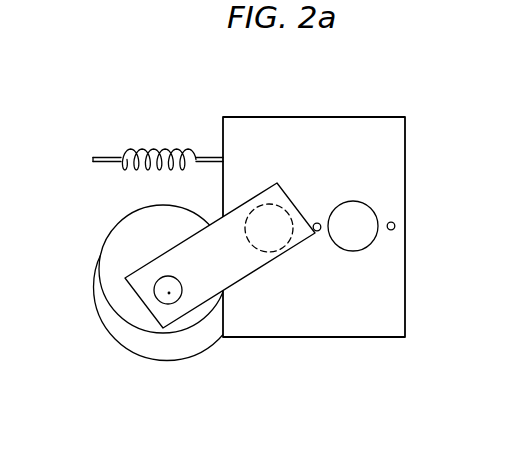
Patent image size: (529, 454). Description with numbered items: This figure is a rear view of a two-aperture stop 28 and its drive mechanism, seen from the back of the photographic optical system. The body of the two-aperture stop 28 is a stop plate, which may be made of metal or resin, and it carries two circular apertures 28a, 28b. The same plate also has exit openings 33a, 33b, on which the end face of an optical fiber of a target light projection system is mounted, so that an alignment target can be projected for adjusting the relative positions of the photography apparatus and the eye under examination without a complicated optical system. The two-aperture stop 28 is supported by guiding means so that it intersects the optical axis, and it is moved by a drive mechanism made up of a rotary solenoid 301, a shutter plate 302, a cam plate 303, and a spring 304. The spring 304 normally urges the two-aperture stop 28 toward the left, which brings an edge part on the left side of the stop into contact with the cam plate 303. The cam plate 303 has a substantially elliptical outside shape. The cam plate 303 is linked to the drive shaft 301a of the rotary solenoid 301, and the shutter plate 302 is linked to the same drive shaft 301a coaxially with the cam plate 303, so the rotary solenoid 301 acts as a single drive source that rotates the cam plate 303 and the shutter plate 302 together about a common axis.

The two-aperture stop 28 is at (363, 163).
The circular aperture 28a is at (253, 212).
The circular aperture 28b is at (371, 218).
The exit opening 33a is at (319, 231).
The exit opening 33b is at (396, 227).
The rotary solenoid 301 is at (124, 327).
The drive shaft 301a is at (169, 293).
The shutter plate 302 is at (147, 280).
The cam plate 303 is at (147, 227).
The spring 304 is at (162, 154).